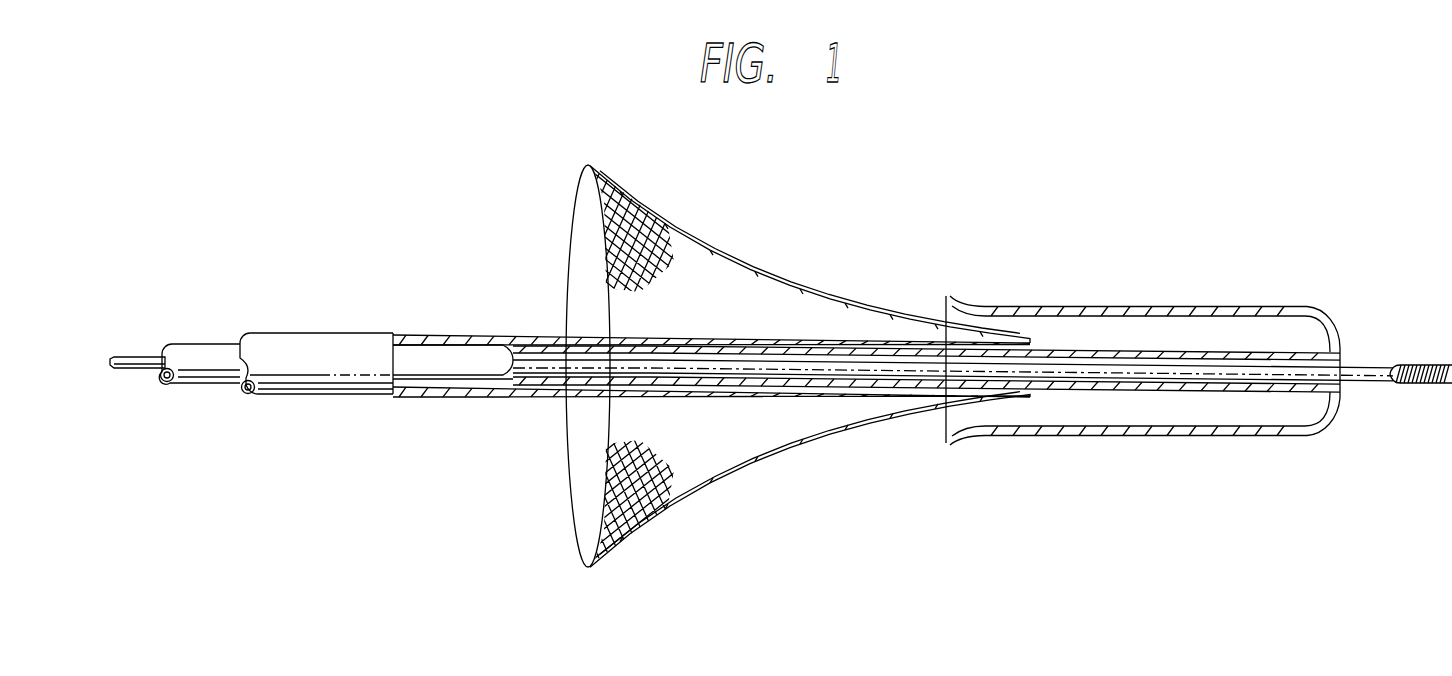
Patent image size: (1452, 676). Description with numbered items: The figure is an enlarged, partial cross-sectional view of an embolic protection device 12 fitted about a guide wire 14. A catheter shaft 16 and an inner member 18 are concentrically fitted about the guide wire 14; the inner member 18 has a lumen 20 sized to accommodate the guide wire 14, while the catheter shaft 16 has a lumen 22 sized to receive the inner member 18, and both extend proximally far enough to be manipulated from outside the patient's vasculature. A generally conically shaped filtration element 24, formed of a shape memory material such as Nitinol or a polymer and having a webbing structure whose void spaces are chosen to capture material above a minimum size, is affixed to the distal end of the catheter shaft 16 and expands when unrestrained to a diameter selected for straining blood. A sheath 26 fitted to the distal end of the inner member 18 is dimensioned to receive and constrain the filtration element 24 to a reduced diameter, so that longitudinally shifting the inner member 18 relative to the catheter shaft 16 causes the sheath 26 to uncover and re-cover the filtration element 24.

The embolic protection device 12 is at (899, 263).
The guide wire 14 is at (142, 357).
The catheter shaft 16 is at (303, 396).
The inner member 18 is at (458, 372).
The lumen 20 is at (160, 380).
The lumen 22 is at (236, 388).
The filtration element 24 is at (632, 512).
The sheath 26 is at (1120, 436).